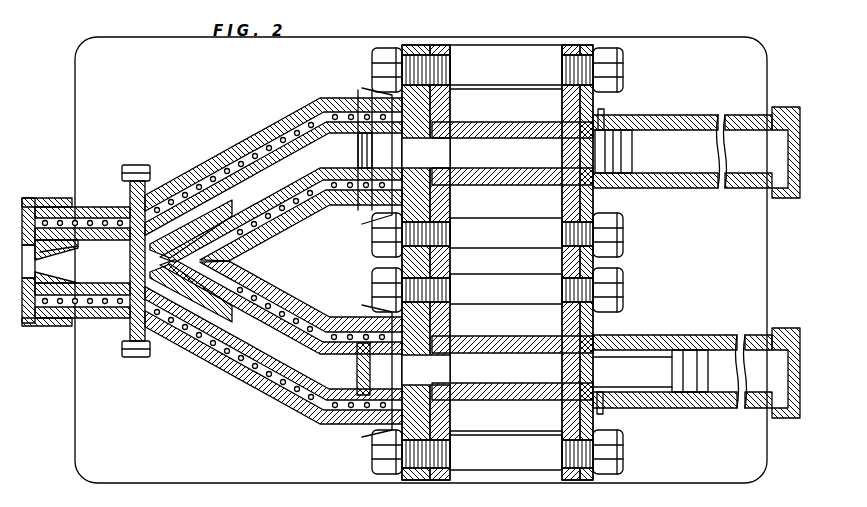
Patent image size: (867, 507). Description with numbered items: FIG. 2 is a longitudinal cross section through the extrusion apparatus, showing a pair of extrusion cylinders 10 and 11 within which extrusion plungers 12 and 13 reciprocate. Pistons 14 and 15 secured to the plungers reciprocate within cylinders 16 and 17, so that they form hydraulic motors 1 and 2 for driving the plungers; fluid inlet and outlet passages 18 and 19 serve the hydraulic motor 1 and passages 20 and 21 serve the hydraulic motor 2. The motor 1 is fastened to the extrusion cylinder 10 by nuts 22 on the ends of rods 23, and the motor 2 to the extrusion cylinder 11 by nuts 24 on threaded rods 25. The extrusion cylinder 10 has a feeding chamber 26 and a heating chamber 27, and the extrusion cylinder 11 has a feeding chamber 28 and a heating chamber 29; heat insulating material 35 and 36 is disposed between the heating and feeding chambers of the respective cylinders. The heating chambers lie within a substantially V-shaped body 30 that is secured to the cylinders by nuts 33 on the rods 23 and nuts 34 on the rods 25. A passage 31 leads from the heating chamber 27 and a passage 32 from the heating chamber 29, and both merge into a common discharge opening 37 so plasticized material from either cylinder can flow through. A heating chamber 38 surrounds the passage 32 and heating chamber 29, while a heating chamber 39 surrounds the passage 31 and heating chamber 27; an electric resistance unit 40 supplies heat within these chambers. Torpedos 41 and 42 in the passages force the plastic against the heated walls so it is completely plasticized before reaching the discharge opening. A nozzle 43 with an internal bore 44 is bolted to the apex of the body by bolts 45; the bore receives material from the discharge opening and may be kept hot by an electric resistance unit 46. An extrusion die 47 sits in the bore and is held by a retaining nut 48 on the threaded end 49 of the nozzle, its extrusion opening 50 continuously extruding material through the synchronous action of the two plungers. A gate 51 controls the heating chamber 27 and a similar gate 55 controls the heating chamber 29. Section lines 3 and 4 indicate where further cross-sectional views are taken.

The hydraulic motor 1 is at (700, 431).
The hydraulic motor 2 is at (708, 110).
The section line 3- 3 is at (369, 161).
The section line 4- 4 is at (369, 372).
The extrusion cylinder 10 is at (498, 340).
The extrusion cylinder 11 is at (528, 109).
The extrusion plunger 12 is at (530, 360).
The extrusion plunger 13 is at (492, 165).
The piston 14 is at (692, 350).
The piston 15 is at (618, 173).
The cylinder 16 is at (646, 340).
The cylinder 17 is at (696, 172).
The fluid inlet and outlet passage 18 is at (603, 414).
The fluid inlet and outlet passage 19 is at (790, 366).
The fluid inlet and outlet passage 20 is at (601, 108).
The fluid inlet and outlet passage 21 is at (790, 156).
The nut 22 is at (610, 472).
The rod 23 is at (540, 462).
The nut 24 is at (622, 70).
The threaded rod 25 is at (518, 56).
The feeding chamber 26 is at (455, 395).
The heating chamber 27 is at (424, 348).
The feeding chamber 28 is at (457, 137).
The heating chamber 29 is at (414, 132).
The V-shaped body 30 is at (228, 154).
The passage 31 is at (250, 372).
The passage 32 is at (285, 166).
The nut 33 is at (388, 472).
The nut 34 is at (408, 48).
The heat insulating material 35 is at (428, 476).
The heat insulating material 36 is at (436, 46).
The common discharge opening 37 is at (146, 271).
The heating chamber 38 is at (200, 170).
The heating chamber 39 is at (285, 396).
The electric resistance unit 40 is at (205, 352).
The torpedo 41 is at (224, 322).
The torpedo 42 is at (224, 200).
The nozzle 43 is at (98, 207).
The internal bore 44 is at (104, 308).
The bolt 45 is at (137, 165).
The electric resistance unit 46 is at (58, 316).
The extrusion die 47 is at (62, 270).
The retaining nut 48 is at (30, 198).
The threaded end 49 is at (50, 206).
The extrusion opening 50 is at (60, 254).
The gate 51 is at (357, 369).
The gate 55 is at (358, 145).